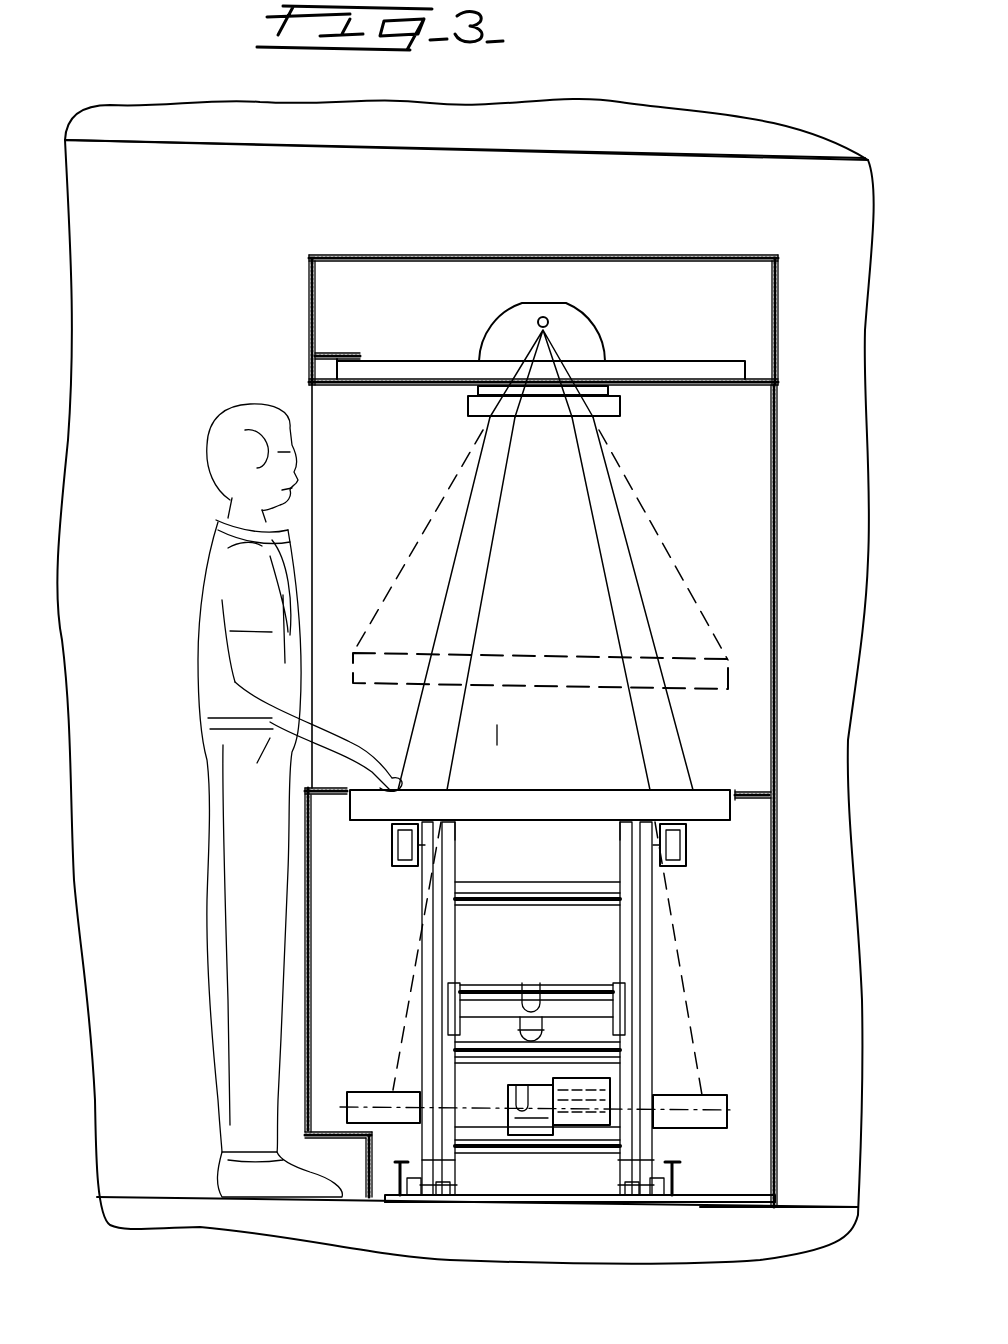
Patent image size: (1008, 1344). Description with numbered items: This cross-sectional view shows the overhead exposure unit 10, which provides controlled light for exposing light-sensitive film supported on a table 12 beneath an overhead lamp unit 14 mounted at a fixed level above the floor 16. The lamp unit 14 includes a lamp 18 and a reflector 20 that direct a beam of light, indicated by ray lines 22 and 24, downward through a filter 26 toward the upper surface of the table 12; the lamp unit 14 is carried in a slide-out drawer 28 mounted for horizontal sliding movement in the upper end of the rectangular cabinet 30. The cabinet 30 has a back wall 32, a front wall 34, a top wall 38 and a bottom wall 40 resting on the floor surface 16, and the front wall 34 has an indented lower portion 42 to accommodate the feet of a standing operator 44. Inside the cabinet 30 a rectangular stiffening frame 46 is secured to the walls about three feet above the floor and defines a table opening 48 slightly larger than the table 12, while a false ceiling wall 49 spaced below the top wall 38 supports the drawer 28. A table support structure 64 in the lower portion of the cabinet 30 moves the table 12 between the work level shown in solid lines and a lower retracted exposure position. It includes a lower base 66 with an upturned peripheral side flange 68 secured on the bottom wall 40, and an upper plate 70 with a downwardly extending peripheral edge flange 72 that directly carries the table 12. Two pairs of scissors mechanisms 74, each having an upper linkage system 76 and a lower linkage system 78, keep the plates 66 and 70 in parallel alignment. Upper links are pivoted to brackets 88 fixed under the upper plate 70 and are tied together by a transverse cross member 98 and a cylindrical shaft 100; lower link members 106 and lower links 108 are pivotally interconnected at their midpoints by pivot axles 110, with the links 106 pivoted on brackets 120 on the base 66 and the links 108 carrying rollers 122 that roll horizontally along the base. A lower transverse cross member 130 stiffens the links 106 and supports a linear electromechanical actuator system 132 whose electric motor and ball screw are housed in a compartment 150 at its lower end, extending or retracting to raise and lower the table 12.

The overhead exposure unit 10 is at (293, 332).
The table 12 is at (722, 810).
The overhead lamp unit 14 is at (580, 332).
The floor 16 is at (148, 1195).
The lamp 18 is at (538, 322).
The reflector 20 is at (511, 320).
The ray lines 22 is at (476, 510).
The ray lines 24 is at (488, 600).
The filter 26 is at (620, 410).
The slide-out drawer 28 is at (307, 290).
The cabinet 30 is at (304, 1063).
The back wall 32 is at (777, 628).
The front wall 34 is at (264, 1015).
The top wall 38 is at (557, 254).
The bottom wall 40 is at (730, 1196).
The indented lower portion 42 is at (366, 1172).
The operator 44 is at (205, 750).
The stiffening frame 46 is at (762, 795).
The table opening 48 is at (748, 792).
The false ceiling wall 49 is at (347, 386).
The table support structure 64 is at (563, 1059).
The lower base 66 is at (530, 1207).
The upturned peripheral side flange 68 is at (398, 1178).
The upper plate 70 is at (540, 812).
The peripheral edge flange 72 is at (400, 850).
The scissors mechanisms 74 is at (414, 960).
The upper linkage system 76 is at (605, 923).
The lower linkage system 78 is at (605, 1078).
The brackets 88 is at (620, 828).
The transverse cross member 98 is at (462, 880).
The cylindrical shaft 100 is at (490, 985).
The lower link members 106 is at (460, 1157).
The lower links 108 is at (425, 1055).
The pivot axles 110 is at (418, 1107).
The brackets 120 is at (455, 1200).
The rollers 122 is at (405, 1205).
The transverse cross member 130 is at (605, 1200).
The linear electromechanical actuator system 132 is at (552, 1026).
The compartment 150 is at (610, 1115).